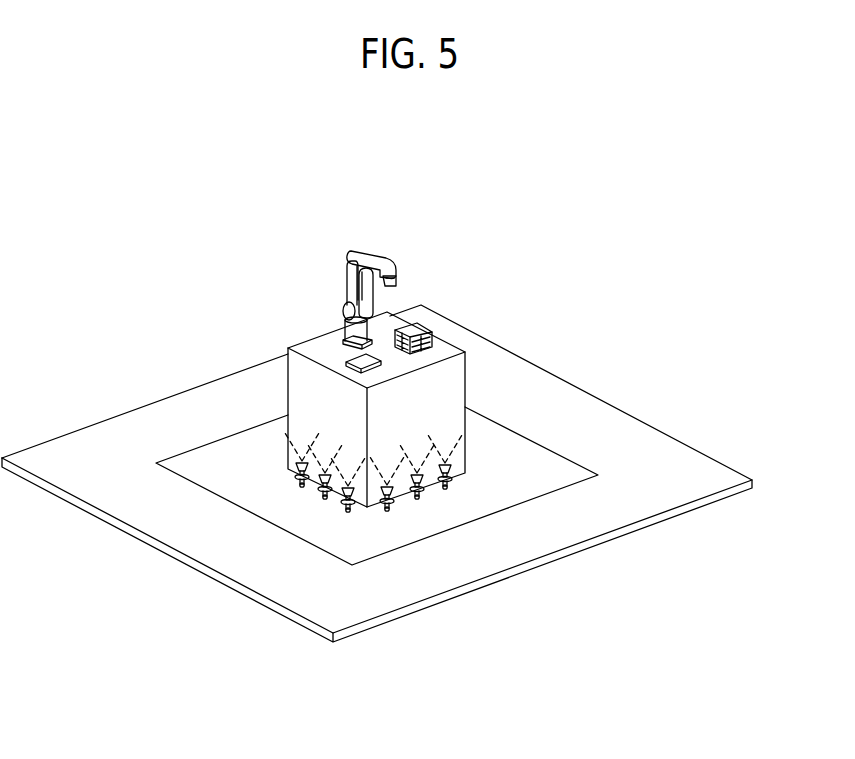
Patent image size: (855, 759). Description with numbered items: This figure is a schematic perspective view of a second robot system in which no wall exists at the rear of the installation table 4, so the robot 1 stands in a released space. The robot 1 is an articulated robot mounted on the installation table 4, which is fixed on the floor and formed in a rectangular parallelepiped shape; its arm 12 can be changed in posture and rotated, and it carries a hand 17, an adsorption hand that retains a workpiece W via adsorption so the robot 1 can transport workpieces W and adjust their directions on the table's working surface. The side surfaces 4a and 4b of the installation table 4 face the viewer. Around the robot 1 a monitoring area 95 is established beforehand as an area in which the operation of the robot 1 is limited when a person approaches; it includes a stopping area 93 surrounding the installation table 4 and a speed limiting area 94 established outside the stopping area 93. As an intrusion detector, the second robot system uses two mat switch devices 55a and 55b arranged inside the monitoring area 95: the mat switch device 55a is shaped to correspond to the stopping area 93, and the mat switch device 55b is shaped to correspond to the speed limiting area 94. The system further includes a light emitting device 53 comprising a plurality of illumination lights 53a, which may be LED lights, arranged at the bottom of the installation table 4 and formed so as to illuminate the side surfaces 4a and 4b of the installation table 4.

The robot 1 is at (371, 252).
The arm 12 is at (363, 283).
The hand 17 is at (397, 287).
The installation table 4 is at (381, 380).
The side surface 4a is at (290, 362).
The side surface 4b is at (455, 383).
The workpiece W is at (362, 362).
The mat switch device 55a is at (512, 458).
The mat switch device 55b is at (682, 467).
The stopping area 93 is at (508, 487).
The speed limiting area 94 is at (628, 505).
The monitoring area 95 is at (420, 473).
The light emitting device 53 is at (347, 590).
The illumination lights 53a is at (300, 475).